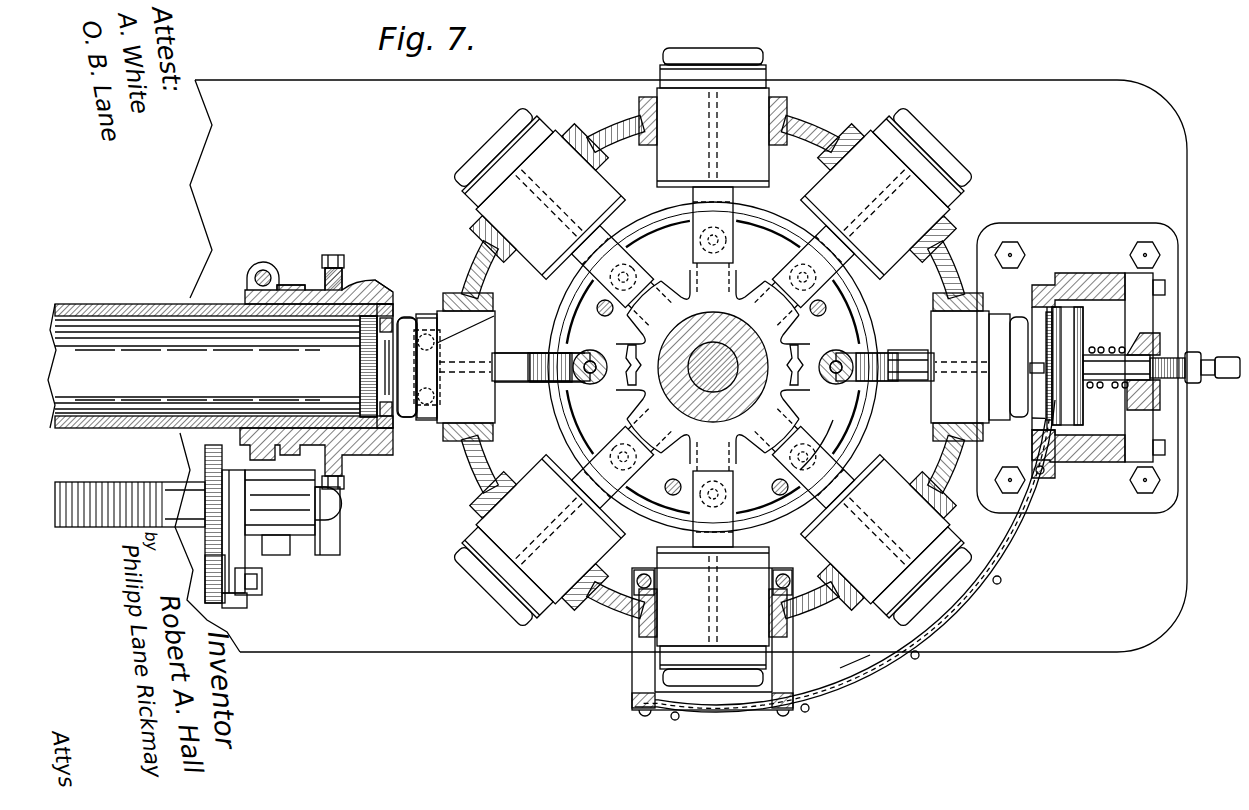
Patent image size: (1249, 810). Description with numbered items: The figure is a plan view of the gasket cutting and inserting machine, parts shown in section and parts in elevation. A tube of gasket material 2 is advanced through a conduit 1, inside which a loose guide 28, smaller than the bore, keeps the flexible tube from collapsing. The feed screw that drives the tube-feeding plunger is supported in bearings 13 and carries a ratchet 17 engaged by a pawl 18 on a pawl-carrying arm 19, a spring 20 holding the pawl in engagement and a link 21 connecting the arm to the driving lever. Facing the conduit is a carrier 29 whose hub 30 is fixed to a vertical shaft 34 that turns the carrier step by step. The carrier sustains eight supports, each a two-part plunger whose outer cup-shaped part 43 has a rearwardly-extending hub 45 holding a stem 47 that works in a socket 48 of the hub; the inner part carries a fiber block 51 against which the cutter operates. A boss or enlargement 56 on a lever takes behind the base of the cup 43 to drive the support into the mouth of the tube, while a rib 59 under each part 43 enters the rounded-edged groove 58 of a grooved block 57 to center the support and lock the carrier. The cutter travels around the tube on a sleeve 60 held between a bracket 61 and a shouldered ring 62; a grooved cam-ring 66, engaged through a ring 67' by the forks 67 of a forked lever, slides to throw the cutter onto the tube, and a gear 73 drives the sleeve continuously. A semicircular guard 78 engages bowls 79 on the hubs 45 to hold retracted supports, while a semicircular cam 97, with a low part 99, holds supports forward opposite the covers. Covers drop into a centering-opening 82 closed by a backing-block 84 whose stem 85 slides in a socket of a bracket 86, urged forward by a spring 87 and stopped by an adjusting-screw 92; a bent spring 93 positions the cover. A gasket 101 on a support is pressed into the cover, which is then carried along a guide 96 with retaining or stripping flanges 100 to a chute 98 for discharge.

The conduit 1 is at (118, 306).
The tube of gasket material 2 is at (207, 366).
The loose guide 28 is at (360, 368).
The bearings 13 is at (198, 502).
The ratchet 17 is at (205, 448).
The pawl 18 is at (206, 560).
The pawl-carrying arm 19 is at (262, 556).
The spring 20 is at (232, 608).
The link 21 is at (258, 590).
The carrier 29 is at (478, 256).
The hub 30 is at (770, 395).
The vertical shaft 34 is at (742, 330).
The plunger part 43 is at (713, 367).
The rearwardly-extending hub 45 is at (572, 282).
The stem 47 is at (713, 356).
The socket 48 is at (750, 447).
The block 51 is at (496, 135).
The boss or enlargement 56 is at (545, 356).
The grooved block 57 is at (494, 316).
The groove 58 is at (425, 400).
The rib 59 is at (520, 360).
The sleeve 60 is at (386, 289).
The bracket 61 is at (250, 290).
The ring 62 is at (395, 302).
The grooved cam-ring 66 is at (350, 285).
The forks 67 is at (335, 372).
The ring 67' is at (354, 264).
The gear 73 is at (291, 280).
The semicircular guard 78 is at (668, 218).
The bowl 79 is at (636, 268).
The centering-opening 82 is at (1062, 305).
The backing-block 84 is at (1064, 366).
The stem 85 is at (1116, 367).
The bracket 86 is at (1130, 340).
The spring 87 is at (1107, 359).
The adjusting-screw 92 is at (900, 352).
The bent spring 93 is at (1026, 373).
The guide 96 is at (1012, 540).
The semicircular cam 97 is at (868, 430).
The chute 98 is at (712, 642).
The low part 99 is at (772, 490).
The retaining or stripping flanges 100 is at (855, 660).
The gasket 101 is at (538, 118).